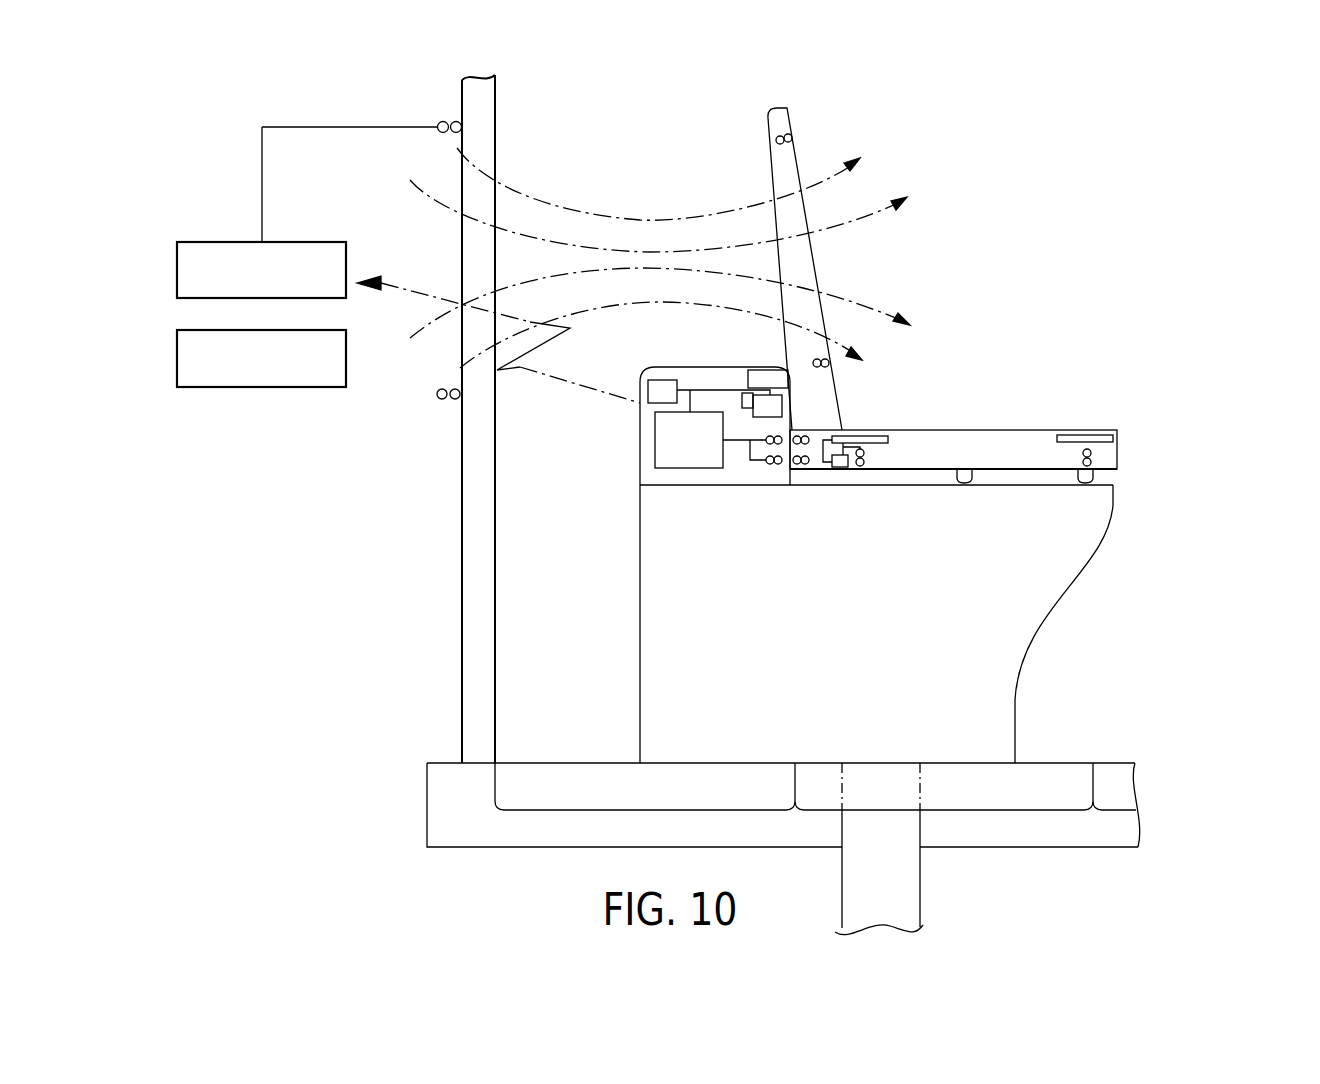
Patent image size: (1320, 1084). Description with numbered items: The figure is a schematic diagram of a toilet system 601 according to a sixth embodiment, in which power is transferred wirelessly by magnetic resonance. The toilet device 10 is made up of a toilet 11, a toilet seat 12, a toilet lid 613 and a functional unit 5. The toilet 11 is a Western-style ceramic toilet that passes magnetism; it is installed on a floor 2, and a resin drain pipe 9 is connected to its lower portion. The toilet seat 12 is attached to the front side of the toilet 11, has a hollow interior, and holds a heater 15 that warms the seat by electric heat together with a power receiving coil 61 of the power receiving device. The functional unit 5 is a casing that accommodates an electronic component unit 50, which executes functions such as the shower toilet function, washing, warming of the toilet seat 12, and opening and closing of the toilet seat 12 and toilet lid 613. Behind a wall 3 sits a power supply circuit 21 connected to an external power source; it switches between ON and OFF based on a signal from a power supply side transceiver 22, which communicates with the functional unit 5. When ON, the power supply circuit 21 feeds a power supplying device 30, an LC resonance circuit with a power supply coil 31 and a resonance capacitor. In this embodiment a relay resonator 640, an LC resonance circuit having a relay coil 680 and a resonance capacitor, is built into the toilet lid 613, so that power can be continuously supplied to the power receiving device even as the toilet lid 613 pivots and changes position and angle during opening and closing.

The floor 2 is at (1075, 755).
The wall 3 is at (462, 450).
The functional unit 5 is at (712, 367).
The drain pipe 9 is at (900, 893).
The toilet device 10 is at (645, 365).
The toilet 11 is at (1055, 572).
The toilet seat 12 is at (1107, 456).
The heater 15 is at (1090, 432).
The power supply circuit 21 is at (348, 262).
The power supply side transceiver 22 is at (348, 352).
The power supplying device 30 is at (431, 110).
The power supply coil 31 is at (454, 120).
The electronic component unit 50 is at (636, 443).
The power receiving coil 61 is at (870, 428).
The toilet system 601 is at (1175, 270).
The toilet lid 613 is at (778, 124).
The relay resonator 640 is at (752, 145).
The relay coil 680 is at (780, 145).